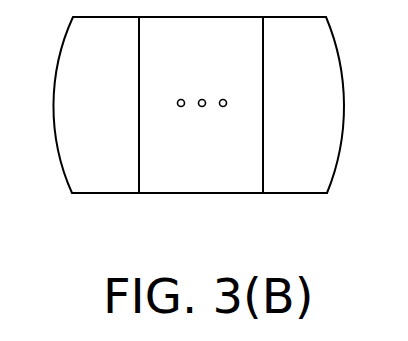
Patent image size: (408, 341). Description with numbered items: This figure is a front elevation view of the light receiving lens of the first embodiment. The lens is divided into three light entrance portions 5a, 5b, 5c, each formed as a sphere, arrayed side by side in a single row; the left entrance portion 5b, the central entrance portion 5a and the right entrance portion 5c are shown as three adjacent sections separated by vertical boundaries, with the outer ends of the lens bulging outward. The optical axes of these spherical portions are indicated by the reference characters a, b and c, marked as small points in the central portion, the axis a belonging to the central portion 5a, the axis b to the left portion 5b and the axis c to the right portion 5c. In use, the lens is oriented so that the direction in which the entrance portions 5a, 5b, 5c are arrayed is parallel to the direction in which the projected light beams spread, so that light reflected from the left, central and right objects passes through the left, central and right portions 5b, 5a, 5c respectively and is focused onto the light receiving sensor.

The central light entrance portion 5a is at (217, 180).
The left light entrance portion 5b is at (117, 180).
The right light entrance portion 5c is at (308, 180).
The optical axis a is at (202, 99).
The optical axis b is at (181, 99).
The optical axis c is at (226, 99).